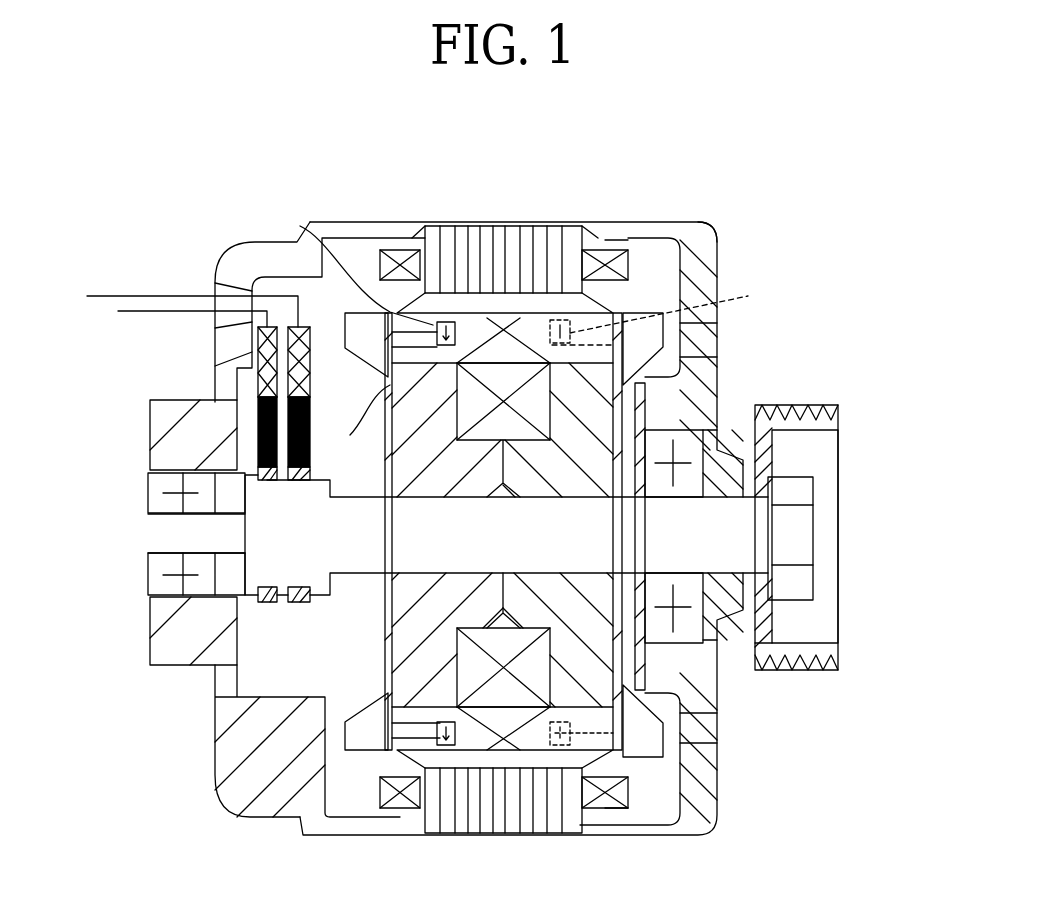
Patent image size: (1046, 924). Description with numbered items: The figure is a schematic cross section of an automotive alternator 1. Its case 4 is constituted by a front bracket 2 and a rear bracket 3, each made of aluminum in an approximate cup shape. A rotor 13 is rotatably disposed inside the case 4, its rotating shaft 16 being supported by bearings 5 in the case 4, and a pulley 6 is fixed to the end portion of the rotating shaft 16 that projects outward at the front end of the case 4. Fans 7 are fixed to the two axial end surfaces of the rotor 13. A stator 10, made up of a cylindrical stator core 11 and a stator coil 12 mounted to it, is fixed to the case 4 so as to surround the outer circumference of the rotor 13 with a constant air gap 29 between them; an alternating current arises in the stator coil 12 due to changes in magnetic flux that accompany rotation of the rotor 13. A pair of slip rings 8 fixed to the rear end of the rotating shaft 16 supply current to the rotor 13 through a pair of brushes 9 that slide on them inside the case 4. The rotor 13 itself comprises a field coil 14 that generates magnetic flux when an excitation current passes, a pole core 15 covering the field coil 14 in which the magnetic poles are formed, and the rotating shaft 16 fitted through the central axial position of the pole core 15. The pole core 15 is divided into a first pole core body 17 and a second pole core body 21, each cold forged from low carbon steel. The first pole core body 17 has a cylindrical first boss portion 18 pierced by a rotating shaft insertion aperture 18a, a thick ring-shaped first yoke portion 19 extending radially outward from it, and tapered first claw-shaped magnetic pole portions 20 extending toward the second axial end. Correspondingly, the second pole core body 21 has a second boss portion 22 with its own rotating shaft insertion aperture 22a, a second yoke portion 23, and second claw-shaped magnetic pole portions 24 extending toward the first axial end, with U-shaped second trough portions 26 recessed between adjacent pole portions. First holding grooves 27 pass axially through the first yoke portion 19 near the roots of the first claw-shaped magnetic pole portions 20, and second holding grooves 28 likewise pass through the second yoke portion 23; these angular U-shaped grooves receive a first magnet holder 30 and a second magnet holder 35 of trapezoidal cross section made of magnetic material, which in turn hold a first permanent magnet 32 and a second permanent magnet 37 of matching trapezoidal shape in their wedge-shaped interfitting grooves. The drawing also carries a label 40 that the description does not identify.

The automotive alternator 1 is at (160, 165).
The front bracket 2 is at (717, 266).
The rear bracket 3 is at (238, 243).
The case 4 is at (733, 230).
The bearings 5 is at (153, 490).
The pulley 6 is at (800, 405).
The fans 7 is at (653, 335).
The slip rings 8 is at (247, 520).
The brushes 9 is at (257, 410).
The stator 10 is at (615, 880).
The stator core 11 is at (557, 823).
The stator coil 12 is at (602, 806).
The rotor 13 is at (615, 305).
The field coil 14 is at (520, 377).
The pole core 15 is at (540, 155).
The rotating shaft 16 is at (755, 535).
The first pole core body 17 is at (526, 306).
The first boss portion 18 is at (640, 650).
The rotating shaft insertion aperture 18a is at (768, 665).
The first yoke portion 19 is at (620, 672).
The first claw-shaped magnetic pole portions 20 is at (517, 750).
The second pole core body 21 is at (473, 328).
The second boss portion 22 is at (420, 600).
The rotating shaft insertion aperture 22a is at (425, 553).
The second yoke portion 23 is at (247, 800).
The second claw-shaped magnetic pole portions 24 is at (475, 735).
The second trough portions 26 is at (380, 672).
The first holding grooves 27 is at (577, 745).
The second holding grooves 28 is at (407, 680).
The air gap 29 is at (392, 305).
The first magnet holder 30 is at (666, 311).
The first permanent magnet 32 is at (555, 745).
The second magnet holder 35 is at (308, 222).
The second permanent magnet 37 is at (437, 740).
The sensor 40 is at (445, 328).